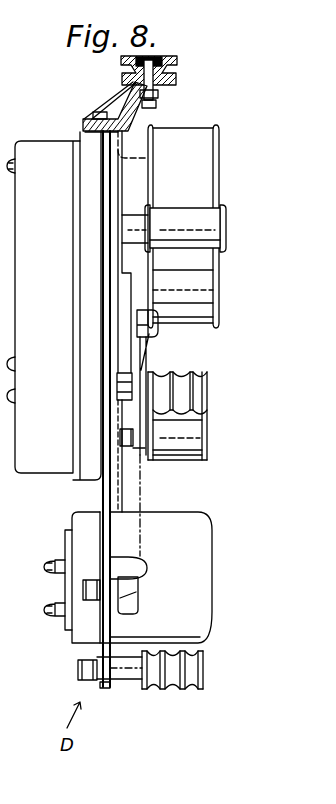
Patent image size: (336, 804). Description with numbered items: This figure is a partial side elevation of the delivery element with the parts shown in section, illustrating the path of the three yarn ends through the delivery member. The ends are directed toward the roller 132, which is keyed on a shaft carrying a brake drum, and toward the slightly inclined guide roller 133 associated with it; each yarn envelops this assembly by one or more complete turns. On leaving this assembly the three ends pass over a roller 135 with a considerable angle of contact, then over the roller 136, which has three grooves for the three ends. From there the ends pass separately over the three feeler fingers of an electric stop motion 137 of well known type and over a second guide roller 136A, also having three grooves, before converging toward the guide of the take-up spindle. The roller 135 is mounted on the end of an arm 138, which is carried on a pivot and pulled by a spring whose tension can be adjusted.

The roller 132 is at (203, 137).
The guide roller 133 is at (177, 216).
The roller 135 is at (182, 440).
The roller 136 is at (175, 378).
The second guide roller 136A is at (180, 690).
The electric stop motion 137 is at (163, 628).
The arm 138 is at (140, 417).